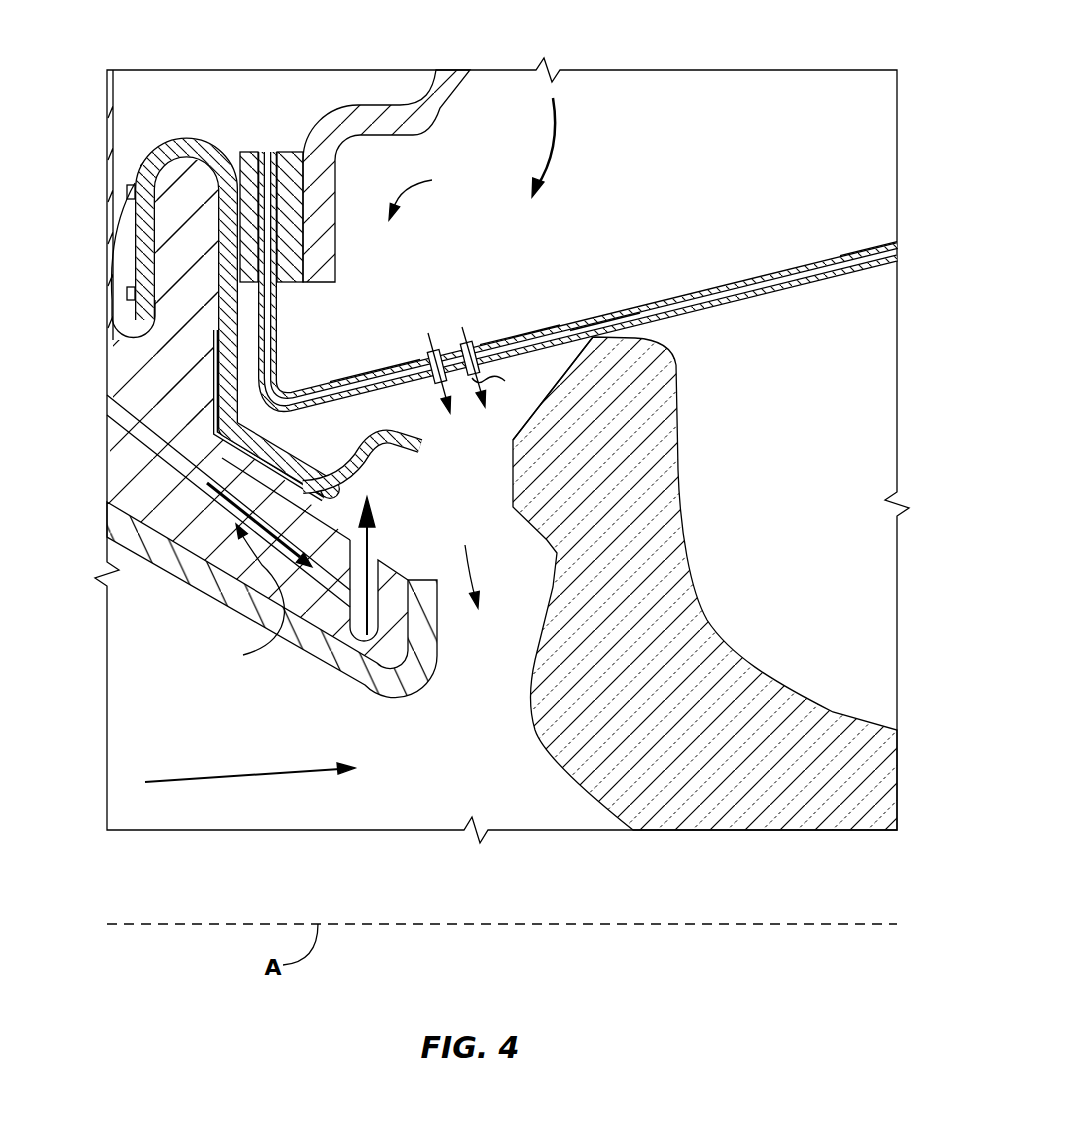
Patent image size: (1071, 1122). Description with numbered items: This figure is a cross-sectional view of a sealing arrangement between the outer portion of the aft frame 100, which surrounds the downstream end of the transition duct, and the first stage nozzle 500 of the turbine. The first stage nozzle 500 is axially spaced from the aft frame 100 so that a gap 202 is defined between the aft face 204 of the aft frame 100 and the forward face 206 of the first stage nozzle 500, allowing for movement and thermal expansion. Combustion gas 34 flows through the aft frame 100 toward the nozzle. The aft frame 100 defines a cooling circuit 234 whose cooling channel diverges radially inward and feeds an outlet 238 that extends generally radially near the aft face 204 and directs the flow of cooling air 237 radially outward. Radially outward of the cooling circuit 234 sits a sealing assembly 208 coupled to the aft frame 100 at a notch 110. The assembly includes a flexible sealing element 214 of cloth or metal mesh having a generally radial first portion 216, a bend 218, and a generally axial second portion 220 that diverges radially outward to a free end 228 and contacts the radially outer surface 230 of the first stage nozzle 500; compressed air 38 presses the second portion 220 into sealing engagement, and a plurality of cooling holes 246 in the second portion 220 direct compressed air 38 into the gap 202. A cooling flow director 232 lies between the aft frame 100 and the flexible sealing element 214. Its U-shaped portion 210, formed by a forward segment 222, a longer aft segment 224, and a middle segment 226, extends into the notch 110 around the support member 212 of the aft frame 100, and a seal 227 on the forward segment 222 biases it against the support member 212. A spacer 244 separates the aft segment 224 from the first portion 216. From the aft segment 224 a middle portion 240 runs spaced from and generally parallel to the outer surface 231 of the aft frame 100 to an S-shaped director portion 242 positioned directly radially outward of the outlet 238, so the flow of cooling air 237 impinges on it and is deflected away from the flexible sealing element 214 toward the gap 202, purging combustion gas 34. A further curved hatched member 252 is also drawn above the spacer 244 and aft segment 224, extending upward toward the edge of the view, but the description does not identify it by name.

The combustion gas 34 is at (224, 773).
The compressed air 38 is at (548, 135).
The aft frame 100 is at (132, 478).
The notch 110 is at (107, 312).
The gap 202 is at (465, 562).
The aft face 204 is at (410, 614).
The forward face 206 is at (520, 478).
The sealing assembly 208 is at (430, 188).
The U-shaped portion 210 is at (176, 140).
The support member 212 is at (187, 248).
The flexible sealing element 214 is at (381, 372).
The first portion 216 is at (280, 322).
The bend 218 is at (283, 368).
The second portion 220 is at (497, 333).
The forward segment 222 is at (120, 188).
The aft segment 224 is at (246, 215).
The middle segment 226 is at (195, 138).
The seal 227 is at (122, 210).
The free end 228 is at (895, 248).
The radially outer surface 230 is at (603, 336).
The outer surface 231 is at (243, 468).
The cooling flow director 232 is at (218, 392).
The cooling circuit 234 is at (228, 572).
The flow of cooling air 237 is at (237, 597).
The outlet 238 is at (362, 637).
The middle portion 240 is at (265, 460).
The director portion 242 is at (355, 430).
The spacer 244 is at (284, 155).
The cooling holes 246 is at (470, 322).
The bracket sheet 252 is at (433, 95).
The first stage nozzle 500 is at (640, 530).